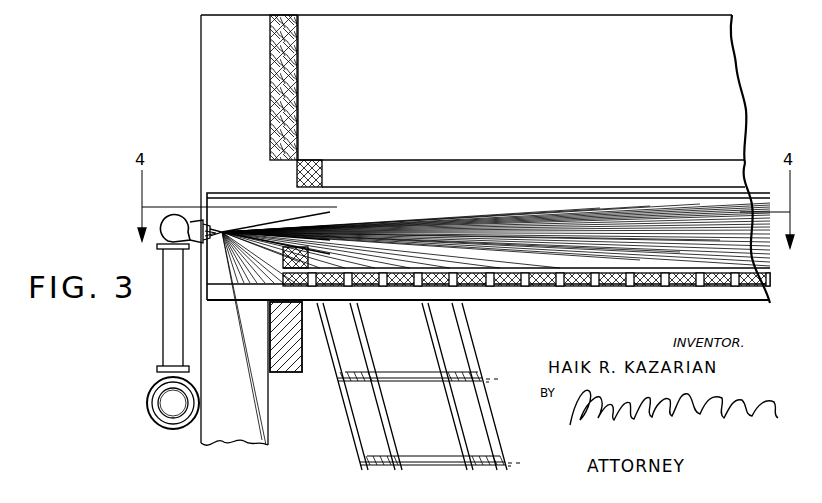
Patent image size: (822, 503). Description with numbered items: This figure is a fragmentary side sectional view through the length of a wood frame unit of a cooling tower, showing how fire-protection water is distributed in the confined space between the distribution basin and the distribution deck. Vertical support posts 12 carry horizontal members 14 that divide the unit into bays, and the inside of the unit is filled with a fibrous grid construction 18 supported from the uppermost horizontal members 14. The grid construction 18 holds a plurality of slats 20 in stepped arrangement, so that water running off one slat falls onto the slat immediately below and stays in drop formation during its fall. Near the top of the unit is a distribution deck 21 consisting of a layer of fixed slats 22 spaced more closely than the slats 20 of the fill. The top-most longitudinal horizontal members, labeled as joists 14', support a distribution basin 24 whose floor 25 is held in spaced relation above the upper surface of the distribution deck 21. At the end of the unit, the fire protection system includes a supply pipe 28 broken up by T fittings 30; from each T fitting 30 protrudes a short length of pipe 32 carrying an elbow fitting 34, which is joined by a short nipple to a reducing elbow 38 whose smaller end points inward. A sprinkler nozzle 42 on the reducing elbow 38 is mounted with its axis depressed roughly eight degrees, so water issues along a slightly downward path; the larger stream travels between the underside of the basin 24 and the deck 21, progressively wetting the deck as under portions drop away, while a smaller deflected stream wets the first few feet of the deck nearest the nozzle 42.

The vertical support post 12 is at (212, 42).
The horizontal member 14 is at (289, 208).
The joist 14' is at (488, 232).
The fibrous grid construction 18 is at (338, 361).
The slat 20 is at (356, 378).
The distribution deck 21 is at (700, 269).
The fixed slat 22 is at (396, 288).
The distribution basin 24 is at (467, 102).
The floor 25 is at (479, 190).
The supply pipe 28 is at (152, 421).
The T fitting 30 is at (148, 396).
The short length of pipe 32 is at (172, 333).
The elbow fitting 34 is at (162, 249).
The reducing elbow 38 is at (190, 222).
The sprinkler nozzle 42 is at (212, 230).